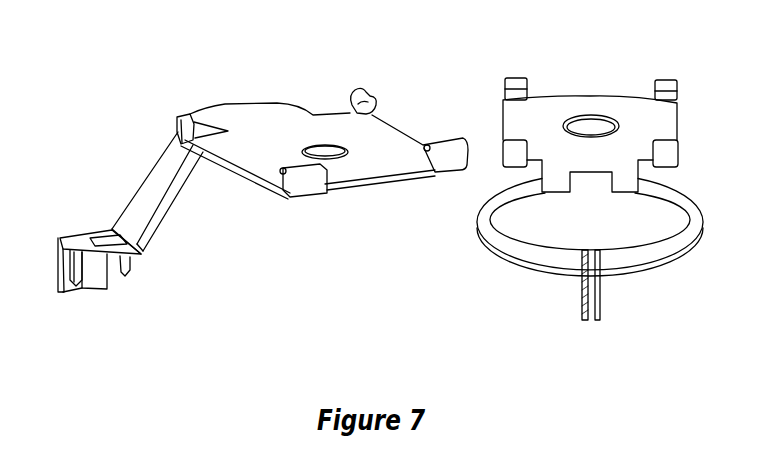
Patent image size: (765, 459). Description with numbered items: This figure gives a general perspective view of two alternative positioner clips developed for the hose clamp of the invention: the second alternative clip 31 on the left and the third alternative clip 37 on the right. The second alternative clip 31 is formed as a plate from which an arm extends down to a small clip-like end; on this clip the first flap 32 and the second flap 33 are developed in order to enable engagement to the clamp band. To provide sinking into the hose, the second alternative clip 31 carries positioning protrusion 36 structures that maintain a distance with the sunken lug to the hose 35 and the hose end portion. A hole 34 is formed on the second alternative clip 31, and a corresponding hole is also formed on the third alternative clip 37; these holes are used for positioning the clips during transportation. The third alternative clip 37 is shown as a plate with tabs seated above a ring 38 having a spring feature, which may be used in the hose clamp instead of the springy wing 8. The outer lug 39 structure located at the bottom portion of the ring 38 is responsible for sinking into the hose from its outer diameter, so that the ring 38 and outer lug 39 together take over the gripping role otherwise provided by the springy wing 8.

The springy wing 8 is at (133, 174).
The second alternative clip 31 is at (255, 64).
The first flap 32 is at (362, 90).
The second flap 33 is at (310, 186).
The hole 34 is at (323, 150).
The sunken lug to the hose 35 is at (88, 284).
The positioning protrusion 36 is at (65, 294).
The third alternative clip 37 is at (594, 62).
The ring 38 is at (512, 265).
The outer lug 39 is at (597, 322).